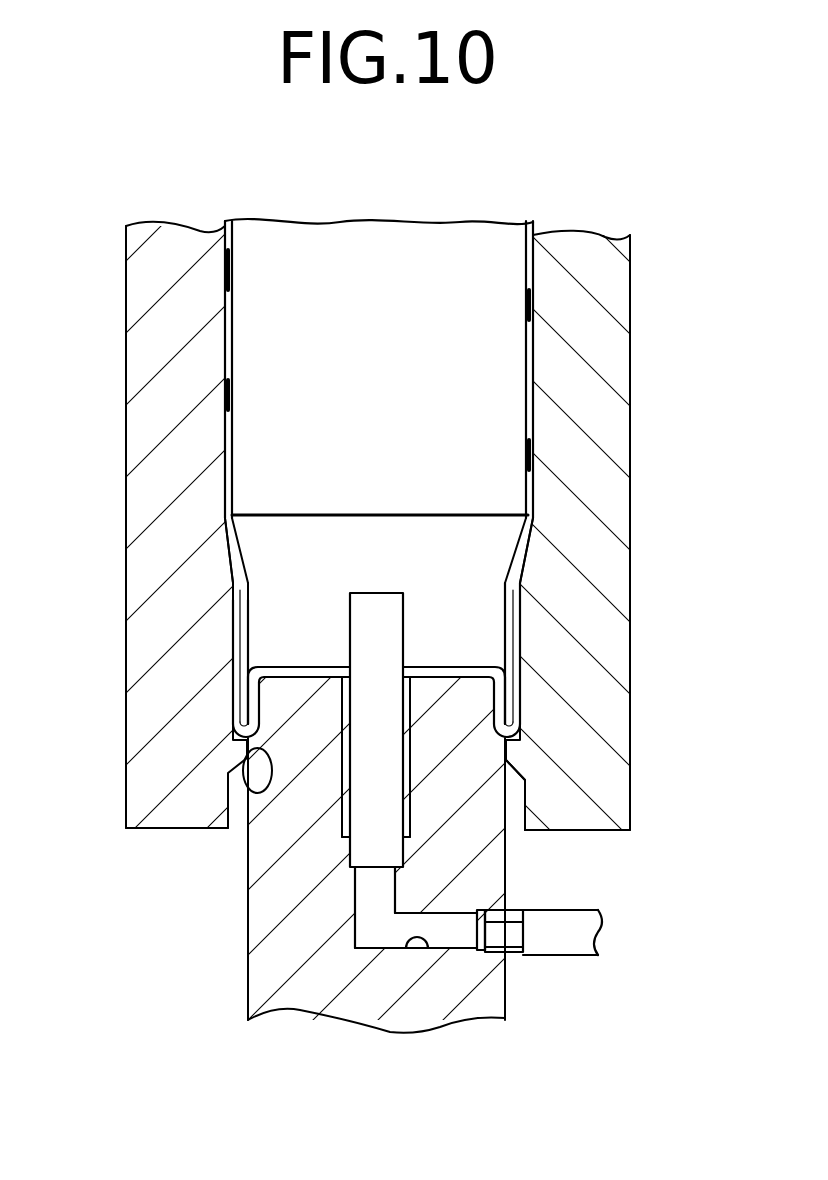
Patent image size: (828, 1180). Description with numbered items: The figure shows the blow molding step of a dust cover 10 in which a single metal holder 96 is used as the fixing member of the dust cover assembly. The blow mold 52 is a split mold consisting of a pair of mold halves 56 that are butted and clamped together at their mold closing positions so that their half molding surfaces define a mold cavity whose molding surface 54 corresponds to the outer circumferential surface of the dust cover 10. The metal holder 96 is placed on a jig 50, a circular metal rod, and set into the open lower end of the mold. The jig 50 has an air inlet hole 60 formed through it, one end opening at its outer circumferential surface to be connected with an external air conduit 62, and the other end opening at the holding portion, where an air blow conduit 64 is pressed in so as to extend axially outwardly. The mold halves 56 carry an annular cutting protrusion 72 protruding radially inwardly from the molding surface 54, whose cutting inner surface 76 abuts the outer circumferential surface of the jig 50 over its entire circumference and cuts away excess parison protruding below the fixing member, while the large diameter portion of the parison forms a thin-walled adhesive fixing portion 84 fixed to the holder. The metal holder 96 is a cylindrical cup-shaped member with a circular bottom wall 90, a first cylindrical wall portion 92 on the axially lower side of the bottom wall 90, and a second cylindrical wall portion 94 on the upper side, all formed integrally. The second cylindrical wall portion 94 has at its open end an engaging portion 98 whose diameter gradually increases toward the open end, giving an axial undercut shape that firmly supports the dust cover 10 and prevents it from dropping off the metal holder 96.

The dust cover 10 is at (550, 445).
The jig 50 is at (265, 972).
The blow mold 52 is at (646, 261).
The molding surface 54 is at (527, 313).
The mold half 56 is at (160, 372).
The air inlet hole 60 is at (427, 952).
The external air conduit 62 is at (562, 940).
The air blow conduit 64 is at (390, 625).
The annular cutting protrusion 72 is at (513, 753).
The cutting inner surface 76 is at (246, 792).
The thin-walled adhesive fixing portion 84 is at (235, 617).
The circular bottom wall 90 is at (308, 670).
The first cylindrical wall portion 92 is at (512, 715).
The second cylindrical wall portion 94 is at (512, 603).
The metal holder 96 is at (221, 727).
The engaging portion 98 is at (229, 556).